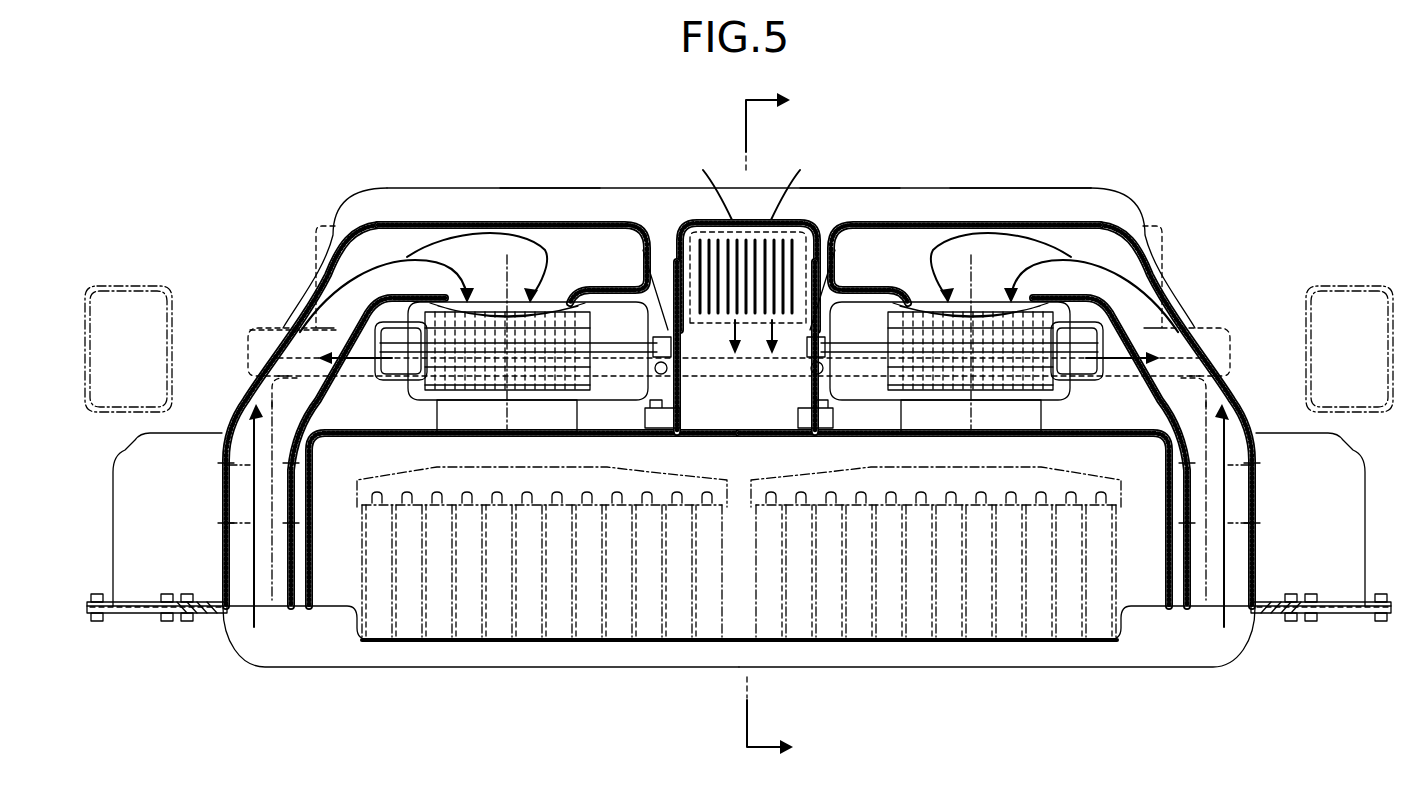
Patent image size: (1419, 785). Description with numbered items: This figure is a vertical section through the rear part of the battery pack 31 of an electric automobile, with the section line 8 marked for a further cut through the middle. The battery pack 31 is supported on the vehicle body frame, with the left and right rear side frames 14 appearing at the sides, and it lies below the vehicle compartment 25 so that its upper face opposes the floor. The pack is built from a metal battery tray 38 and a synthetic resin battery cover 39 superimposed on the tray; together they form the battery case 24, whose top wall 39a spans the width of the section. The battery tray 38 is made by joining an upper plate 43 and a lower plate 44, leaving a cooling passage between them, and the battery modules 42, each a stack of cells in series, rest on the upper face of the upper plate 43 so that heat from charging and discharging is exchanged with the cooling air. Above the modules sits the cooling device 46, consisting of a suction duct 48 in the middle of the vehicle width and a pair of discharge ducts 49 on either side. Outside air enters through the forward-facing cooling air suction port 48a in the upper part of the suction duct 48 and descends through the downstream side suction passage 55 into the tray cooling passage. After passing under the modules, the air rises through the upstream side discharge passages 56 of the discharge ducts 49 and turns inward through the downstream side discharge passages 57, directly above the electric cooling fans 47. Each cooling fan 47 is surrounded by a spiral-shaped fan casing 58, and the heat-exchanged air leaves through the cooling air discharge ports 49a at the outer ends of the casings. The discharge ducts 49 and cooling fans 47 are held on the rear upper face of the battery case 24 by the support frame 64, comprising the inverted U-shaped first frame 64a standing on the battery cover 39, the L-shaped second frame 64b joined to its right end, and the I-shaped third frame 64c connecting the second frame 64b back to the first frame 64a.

The section line 8- 8 is at (755, 430).
The rear side frame 14 is at (136, 285).
The battery case 24 is at (298, 293).
The vehicle compartment 25 is at (691, 143).
The battery pack 31 is at (1014, 166).
The battery tray 38 is at (703, 735).
The battery cover 39 is at (478, 189).
The cover top wall 39a is at (855, 187).
The battery module 42 is at (563, 643).
The upper plate 43 is at (590, 647).
The lower plate 44 is at (700, 667).
The cooling device 46 is at (548, 189).
The cooling fan 47 is at (400, 402).
The suction duct 48 is at (753, 224).
The cooling air suction port 48a is at (710, 253).
The discharge duct 49 is at (377, 231).
The cooling air discharge port 49a is at (420, 367).
The downstream side suction passage 55 is at (766, 432).
The upstream side discharge passage 56 is at (321, 402).
The downstream side discharge passage 57 is at (616, 266).
The fan casing 58 is at (600, 385).
The support frame 64 is at (1104, 385).
The first frame 64a is at (287, 333).
The second frame 64b is at (1106, 372).
The third frame 64c is at (665, 378).